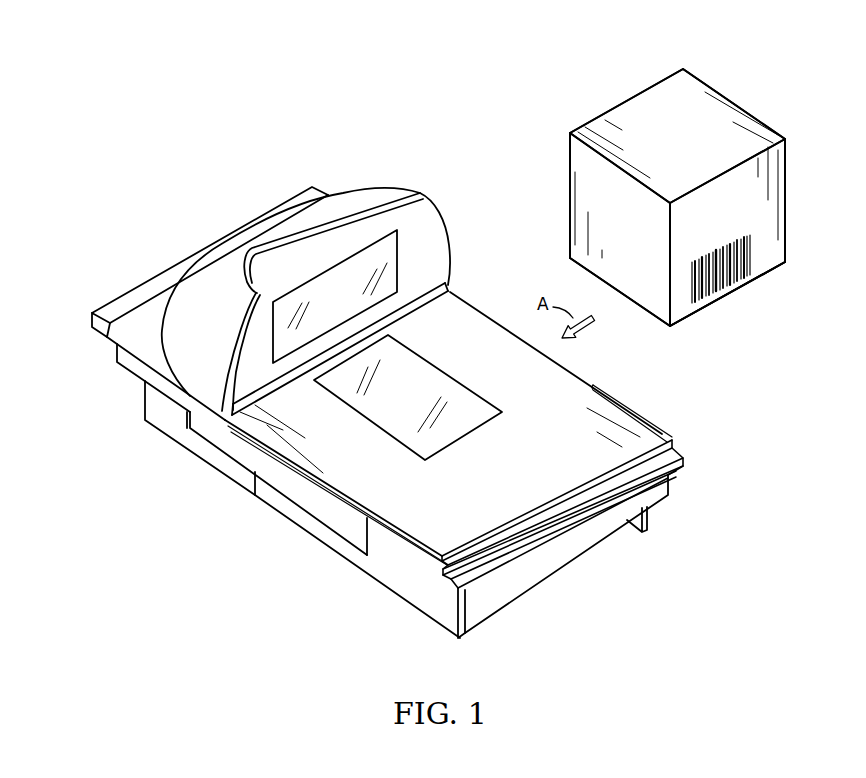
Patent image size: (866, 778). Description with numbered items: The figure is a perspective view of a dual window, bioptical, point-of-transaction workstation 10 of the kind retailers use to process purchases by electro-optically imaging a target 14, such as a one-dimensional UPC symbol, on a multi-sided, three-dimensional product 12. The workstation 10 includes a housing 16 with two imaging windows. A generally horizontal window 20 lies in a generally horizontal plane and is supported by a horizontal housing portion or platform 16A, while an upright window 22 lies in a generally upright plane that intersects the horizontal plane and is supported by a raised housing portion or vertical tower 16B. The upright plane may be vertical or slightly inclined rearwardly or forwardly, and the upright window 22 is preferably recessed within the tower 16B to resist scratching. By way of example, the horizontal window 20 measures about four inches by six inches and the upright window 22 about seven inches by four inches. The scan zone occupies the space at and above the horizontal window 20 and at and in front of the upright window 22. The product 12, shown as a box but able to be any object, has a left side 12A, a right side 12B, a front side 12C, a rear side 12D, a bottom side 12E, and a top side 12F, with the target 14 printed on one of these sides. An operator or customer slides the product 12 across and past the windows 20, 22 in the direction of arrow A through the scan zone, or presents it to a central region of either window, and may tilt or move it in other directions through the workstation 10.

The point-of-transaction workstation 10 is at (230, 558).
The product 12 is at (747, 92).
The left side 12A is at (663, 307).
The right side 12B is at (787, 202).
The front side 12C is at (768, 258).
The rear side 12D is at (630, 98).
The bottom side 12E is at (763, 277).
The top side 12F is at (595, 120).
The target 14 is at (717, 297).
The housing 16 is at (465, 273).
The horizontal housing portion 16A is at (287, 427).
The vertical tower 16B is at (430, 207).
The horizontal window 20 is at (383, 467).
The upright window 22 is at (360, 262).